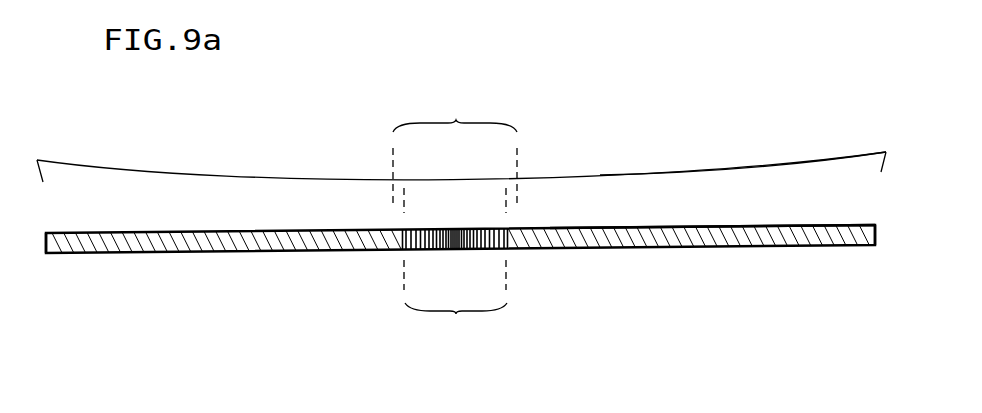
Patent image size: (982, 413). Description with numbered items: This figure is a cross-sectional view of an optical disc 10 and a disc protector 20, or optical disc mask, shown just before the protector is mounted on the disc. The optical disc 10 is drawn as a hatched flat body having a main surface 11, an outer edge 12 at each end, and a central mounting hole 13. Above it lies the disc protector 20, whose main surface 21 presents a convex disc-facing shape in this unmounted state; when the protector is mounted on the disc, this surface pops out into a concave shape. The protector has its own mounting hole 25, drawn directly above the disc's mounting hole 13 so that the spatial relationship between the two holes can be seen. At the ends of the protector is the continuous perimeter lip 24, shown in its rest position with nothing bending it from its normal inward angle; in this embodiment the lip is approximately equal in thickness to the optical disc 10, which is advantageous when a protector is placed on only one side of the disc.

The optical disc 10 is at (617, 238).
The main surface of the optical disc 11 is at (650, 225).
The outer edge of the optical disc 12 is at (855, 283).
The mounting hole of the optical disc 13 is at (456, 313).
The disc protector 20 is at (273, 170).
The main surface of the disc protector 21 is at (672, 170).
The continuous perimeter lip 24 is at (883, 165).
The mounting hole of the disc protector 25 is at (456, 121).